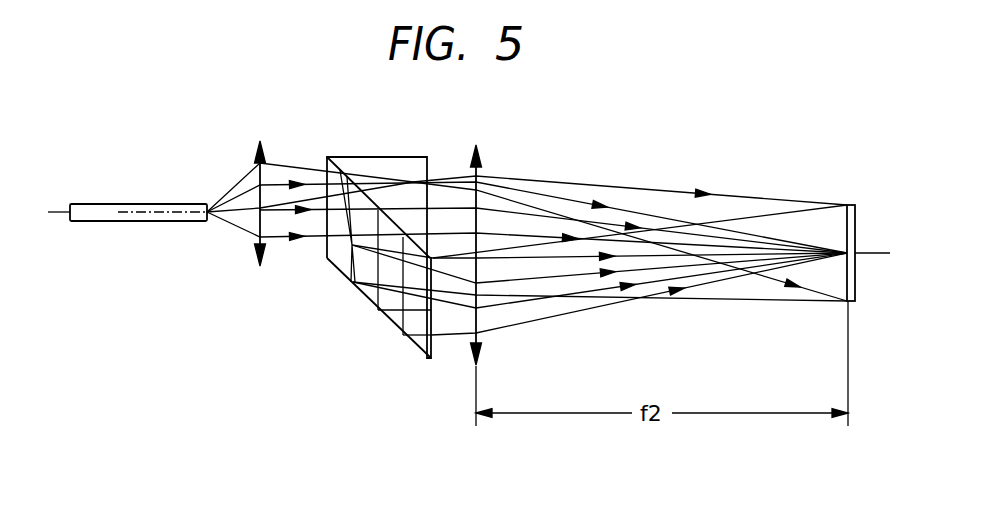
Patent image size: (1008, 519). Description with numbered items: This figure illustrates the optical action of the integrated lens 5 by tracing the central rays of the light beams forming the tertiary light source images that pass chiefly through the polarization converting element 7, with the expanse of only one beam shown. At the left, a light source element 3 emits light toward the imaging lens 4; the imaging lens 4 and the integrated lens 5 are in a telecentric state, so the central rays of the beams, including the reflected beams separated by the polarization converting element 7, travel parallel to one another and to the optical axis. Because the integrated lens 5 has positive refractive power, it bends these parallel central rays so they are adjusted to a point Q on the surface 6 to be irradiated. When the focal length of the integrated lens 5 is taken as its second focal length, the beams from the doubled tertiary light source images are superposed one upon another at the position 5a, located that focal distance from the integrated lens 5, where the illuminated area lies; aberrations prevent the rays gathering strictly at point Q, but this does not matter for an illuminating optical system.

The optical fiber 3 is at (144, 222).
The imaging lens 4 is at (259, 141).
The integrated lens 5 is at (479, 142).
The position 5a is at (818, 220).
The surface to be irradiated 6 is at (845, 226).
The polarization converting element 7 is at (367, 299).
The point Q is at (852, 250).